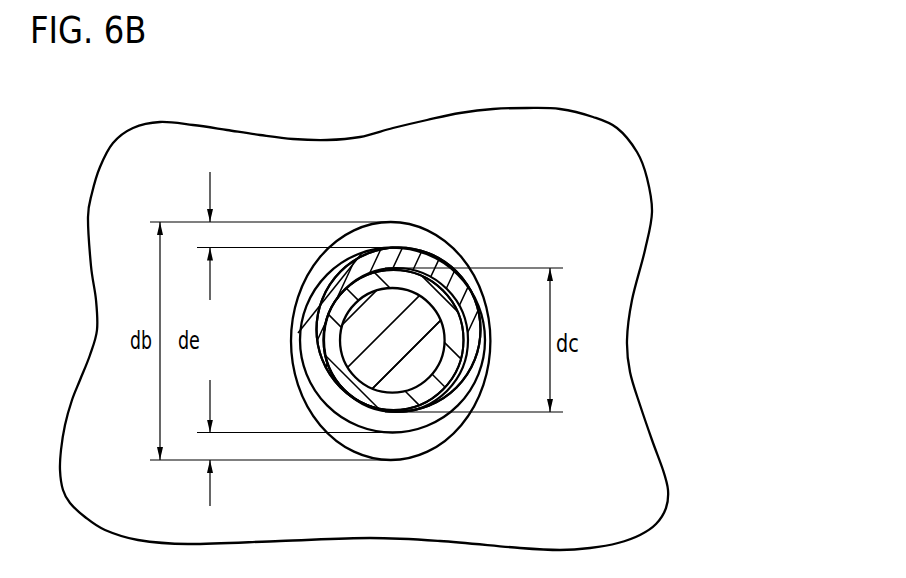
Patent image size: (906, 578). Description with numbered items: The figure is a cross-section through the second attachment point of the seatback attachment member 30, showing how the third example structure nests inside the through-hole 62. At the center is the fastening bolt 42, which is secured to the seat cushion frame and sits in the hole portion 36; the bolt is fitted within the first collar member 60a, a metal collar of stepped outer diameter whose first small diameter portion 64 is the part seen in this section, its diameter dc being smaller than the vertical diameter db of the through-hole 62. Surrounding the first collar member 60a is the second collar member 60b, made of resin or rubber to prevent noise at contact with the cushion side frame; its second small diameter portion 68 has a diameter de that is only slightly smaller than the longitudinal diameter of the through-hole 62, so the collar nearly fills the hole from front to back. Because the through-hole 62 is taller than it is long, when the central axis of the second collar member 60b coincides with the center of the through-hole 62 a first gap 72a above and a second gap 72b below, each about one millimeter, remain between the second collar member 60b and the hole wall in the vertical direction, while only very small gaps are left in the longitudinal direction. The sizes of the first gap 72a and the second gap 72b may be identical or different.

The seatback attachment member 30 is at (542, 140).
The hole portion 36 is at (354, 347).
The fastening bolt 42 is at (396, 380).
The through-hole 62 is at (436, 433).
The first small diameter portion 64 is at (412, 284).
The first collar member 60a is at (452, 314).
The second small diameter portion 68 is at (393, 257).
The second collar member 60b is at (402, 295).
The first gap 72a is at (271, 236).
The second gap 72b is at (271, 443).